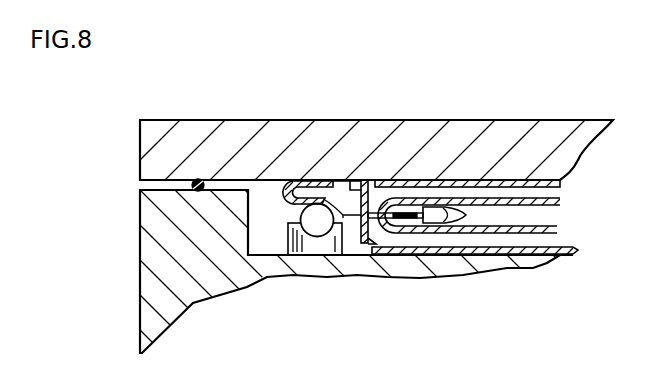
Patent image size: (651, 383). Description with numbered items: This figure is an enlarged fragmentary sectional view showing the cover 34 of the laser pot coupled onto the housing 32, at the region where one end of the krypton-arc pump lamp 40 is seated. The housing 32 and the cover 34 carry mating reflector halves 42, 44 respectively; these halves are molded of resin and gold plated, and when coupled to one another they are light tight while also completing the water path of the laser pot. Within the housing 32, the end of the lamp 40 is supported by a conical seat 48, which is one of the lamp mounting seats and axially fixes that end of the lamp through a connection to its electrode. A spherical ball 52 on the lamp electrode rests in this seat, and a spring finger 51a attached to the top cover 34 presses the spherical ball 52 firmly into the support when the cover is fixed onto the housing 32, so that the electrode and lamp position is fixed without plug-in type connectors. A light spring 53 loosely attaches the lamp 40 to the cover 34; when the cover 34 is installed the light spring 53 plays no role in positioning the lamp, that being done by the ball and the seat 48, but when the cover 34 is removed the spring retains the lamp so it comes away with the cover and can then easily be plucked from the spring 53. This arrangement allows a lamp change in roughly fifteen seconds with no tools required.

The housing 32 is at (140, 313).
The cover 34 is at (140, 153).
The krypton-arc pump lamp 40 is at (536, 228).
The reflector half 42 is at (502, 254).
The reflector half 44 is at (490, 180).
The conical seat 48 is at (287, 237).
The spring finger 51a is at (298, 183).
The spherical ball 52 is at (313, 214).
The light spring 53 is at (368, 243).